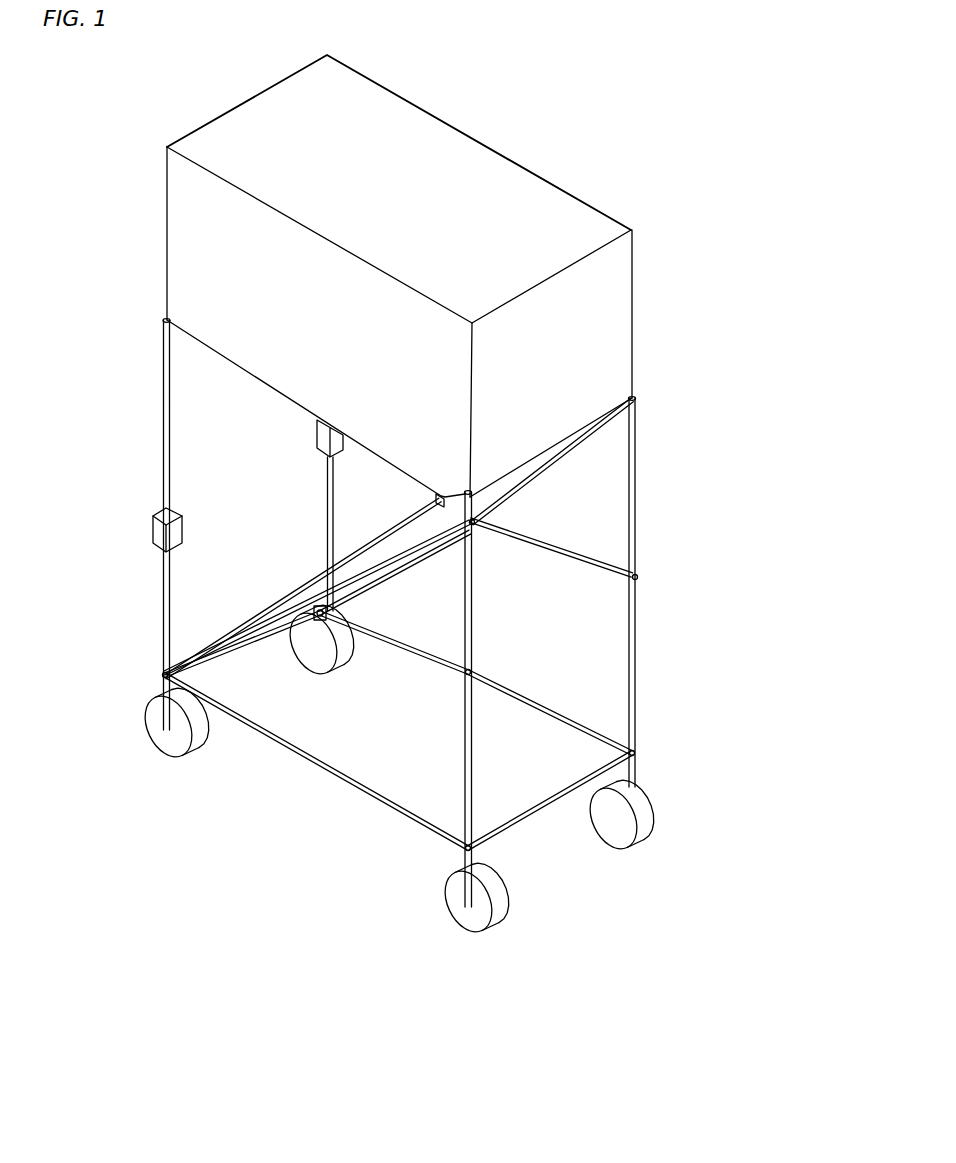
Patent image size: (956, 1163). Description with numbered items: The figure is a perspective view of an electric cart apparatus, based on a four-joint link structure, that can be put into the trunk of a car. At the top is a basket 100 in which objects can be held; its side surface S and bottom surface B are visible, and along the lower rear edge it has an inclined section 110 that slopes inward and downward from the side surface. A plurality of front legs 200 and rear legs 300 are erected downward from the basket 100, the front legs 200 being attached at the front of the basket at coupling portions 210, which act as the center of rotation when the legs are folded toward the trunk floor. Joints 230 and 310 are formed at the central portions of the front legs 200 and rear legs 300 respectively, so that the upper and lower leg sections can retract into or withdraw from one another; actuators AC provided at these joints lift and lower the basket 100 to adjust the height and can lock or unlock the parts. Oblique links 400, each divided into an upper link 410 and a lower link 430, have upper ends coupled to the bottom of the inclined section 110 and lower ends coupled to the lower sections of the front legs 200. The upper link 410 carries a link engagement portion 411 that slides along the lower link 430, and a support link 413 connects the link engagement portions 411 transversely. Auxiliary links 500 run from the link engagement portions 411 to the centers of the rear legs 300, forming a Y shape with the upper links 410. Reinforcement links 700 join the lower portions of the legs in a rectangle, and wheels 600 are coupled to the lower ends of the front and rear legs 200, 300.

The basket 100 is at (468, 178).
The side surface S is at (590, 323).
The bottom surface B is at (200, 346).
The inclined section 110 is at (598, 423).
The coupling portion 210 is at (164, 321).
The front leg 200 is at (323, 508).
The joint 230 is at (157, 513).
The actuator AC is at (323, 443).
The upper link 410 is at (396, 543).
The oblique link 400 is at (318, 746).
The lower link 430 is at (221, 655).
The support link 413 is at (390, 577).
The link engagement portion 411 is at (313, 610).
The auxiliary link 500 is at (390, 645).
The rear leg 300 is at (620, 560).
The joint 310 is at (475, 677).
The reinforcement link 700 is at (328, 768).
The wheel 600 is at (162, 738).